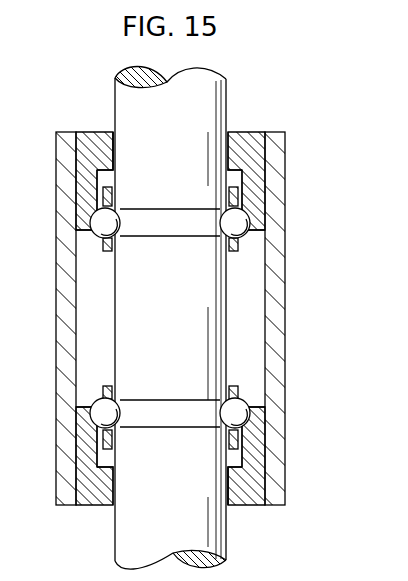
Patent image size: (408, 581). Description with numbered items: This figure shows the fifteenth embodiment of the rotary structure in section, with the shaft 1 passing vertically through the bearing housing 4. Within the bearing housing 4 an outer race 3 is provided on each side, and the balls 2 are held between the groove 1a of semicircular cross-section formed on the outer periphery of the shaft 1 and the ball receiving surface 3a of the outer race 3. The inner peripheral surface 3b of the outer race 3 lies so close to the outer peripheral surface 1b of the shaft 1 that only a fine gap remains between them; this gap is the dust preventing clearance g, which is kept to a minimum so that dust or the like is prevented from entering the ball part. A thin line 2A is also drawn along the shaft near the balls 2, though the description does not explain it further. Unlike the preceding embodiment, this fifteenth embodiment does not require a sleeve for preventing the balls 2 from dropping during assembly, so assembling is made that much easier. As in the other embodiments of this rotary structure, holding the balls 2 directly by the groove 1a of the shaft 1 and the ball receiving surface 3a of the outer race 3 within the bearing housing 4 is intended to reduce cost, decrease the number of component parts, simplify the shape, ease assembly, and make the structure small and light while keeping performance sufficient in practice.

The shaft 1 is at (120, 309).
The groove 1a is at (121, 223).
The outer peripheral surface of the shaft 1b is at (228, 309).
The balls 2 is at (240, 237).
The sleeve line 2A is at (221, 189).
The outer race 3 is at (95, 132).
The ball receiving surface 3a is at (88, 232).
The inner peripheral surface of the outer race 3b is at (107, 157).
The bearing housing 4 is at (284, 279).
The dust preventing clearance g is at (113, 131).